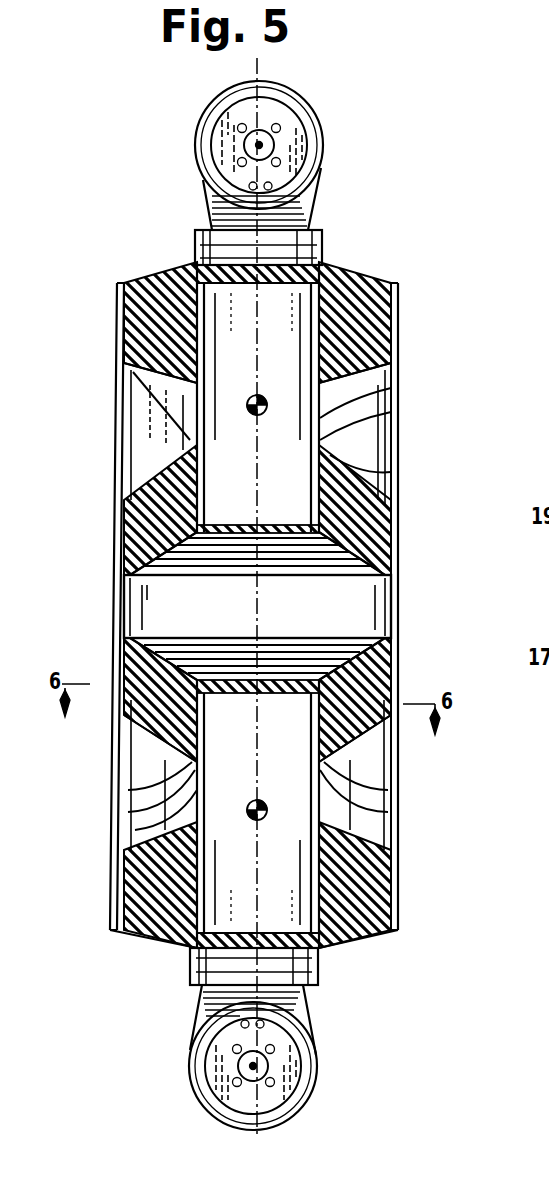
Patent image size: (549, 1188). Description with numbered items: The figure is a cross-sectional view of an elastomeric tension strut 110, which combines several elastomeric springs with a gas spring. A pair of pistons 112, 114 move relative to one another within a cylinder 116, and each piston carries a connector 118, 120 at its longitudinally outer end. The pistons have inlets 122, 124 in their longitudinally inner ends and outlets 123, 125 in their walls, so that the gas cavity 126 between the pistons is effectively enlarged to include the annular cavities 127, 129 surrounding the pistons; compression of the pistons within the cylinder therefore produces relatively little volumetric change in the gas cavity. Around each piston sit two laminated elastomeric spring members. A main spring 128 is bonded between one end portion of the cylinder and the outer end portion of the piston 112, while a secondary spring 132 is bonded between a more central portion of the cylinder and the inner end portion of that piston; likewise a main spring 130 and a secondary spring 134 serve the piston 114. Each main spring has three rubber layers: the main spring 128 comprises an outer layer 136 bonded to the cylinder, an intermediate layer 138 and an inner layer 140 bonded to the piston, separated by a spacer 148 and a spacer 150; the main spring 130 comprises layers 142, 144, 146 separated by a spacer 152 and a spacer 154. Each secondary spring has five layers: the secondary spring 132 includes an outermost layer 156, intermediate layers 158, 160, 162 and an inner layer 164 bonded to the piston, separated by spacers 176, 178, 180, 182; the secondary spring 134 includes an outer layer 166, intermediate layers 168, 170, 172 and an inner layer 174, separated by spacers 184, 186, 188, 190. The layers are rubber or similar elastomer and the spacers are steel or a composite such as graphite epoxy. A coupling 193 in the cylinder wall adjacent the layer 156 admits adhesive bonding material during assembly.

The elastomeric tension strut 110 is at (443, 262).
The piston 112 is at (228, 523).
The piston 114 is at (228, 692).
The cylinder 116 is at (108, 613).
The connector 118 is at (322, 173).
The connector 120 is at (320, 1042).
The inlet 122 is at (263, 528).
The outlet 123 is at (399, 373).
The inlet 124 is at (265, 695).
The outlet 125 is at (399, 848).
The gas cavity 126 is at (108, 597).
The annular cavity 127 is at (399, 402).
The main spring 128 is at (399, 318).
The annular cavity 129 is at (399, 822).
The main spring 130 is at (110, 882).
The secondary spring 132 is at (399, 581).
The secondary spring 134 is at (399, 654).
The elastomeric layer 136 is at (134, 280).
The elastomeric layer 138 is at (157, 295).
The elastomeric layer 140 is at (183, 270).
The elastomeric layer 142 is at (378, 945).
The elastomeric layer 144 is at (355, 950).
The elastomeric layer 146 is at (322, 968).
The spacer 148 is at (368, 262).
The spacer 150 is at (347, 277).
The spacer 152 is at (127, 900).
The spacer 154 is at (148, 910).
The elastomeric layer 156 is at (118, 518).
The elastomeric layer 158 is at (118, 470).
The elastomeric layer 160 is at (118, 437).
The elastomeric layer 162 is at (118, 406).
The elastomeric layer 164 is at (118, 378).
The elastomeric layer 166 is at (108, 640).
The elastomeric layer 168 is at (100, 723).
The elastomeric layer 170 is at (100, 750).
The elastomeric layer 172 is at (100, 775).
The elastomeric layer 174 is at (100, 800).
The spacer 176 is at (399, 500).
The spacer 178 is at (399, 483).
The spacer 180 is at (399, 455).
The spacer 182 is at (399, 432).
The spacer 184 is at (399, 623).
The spacer 186 is at (399, 750).
The spacer 188 is at (399, 778).
The spacer 190 is at (399, 800).
The coupling 193 is at (399, 547).